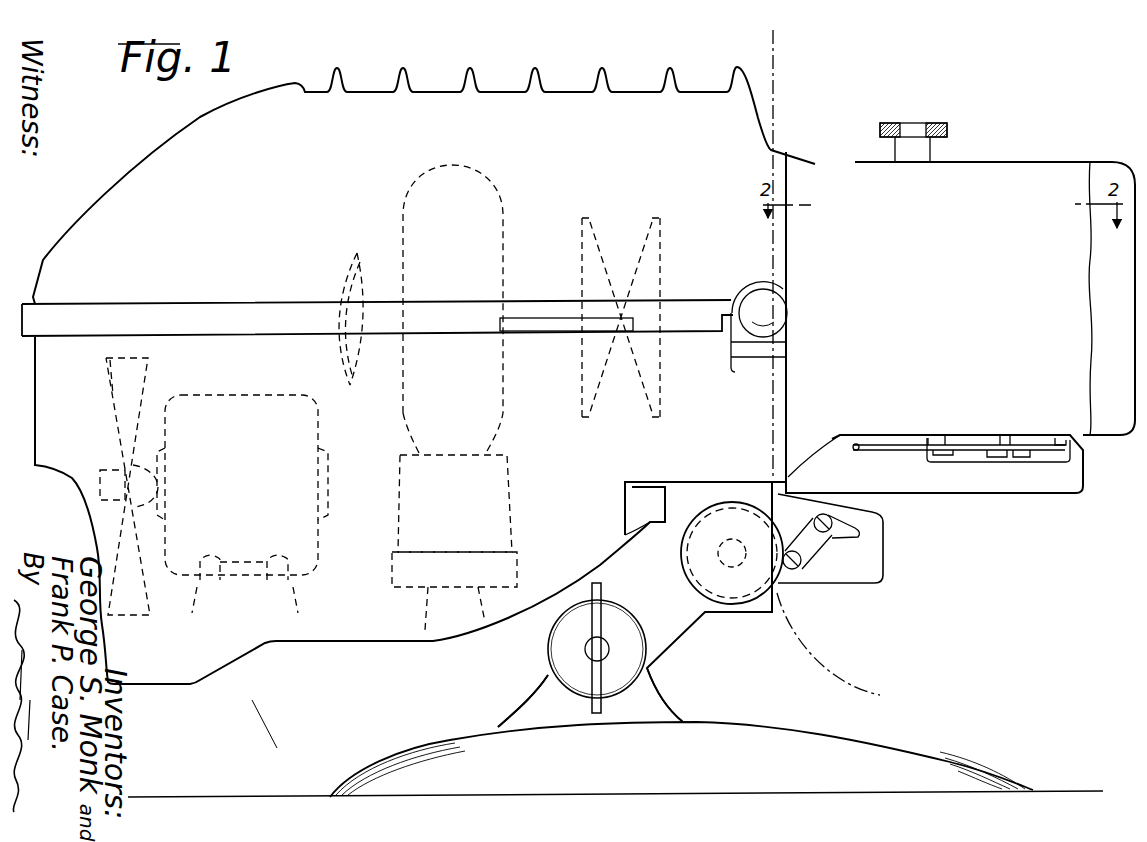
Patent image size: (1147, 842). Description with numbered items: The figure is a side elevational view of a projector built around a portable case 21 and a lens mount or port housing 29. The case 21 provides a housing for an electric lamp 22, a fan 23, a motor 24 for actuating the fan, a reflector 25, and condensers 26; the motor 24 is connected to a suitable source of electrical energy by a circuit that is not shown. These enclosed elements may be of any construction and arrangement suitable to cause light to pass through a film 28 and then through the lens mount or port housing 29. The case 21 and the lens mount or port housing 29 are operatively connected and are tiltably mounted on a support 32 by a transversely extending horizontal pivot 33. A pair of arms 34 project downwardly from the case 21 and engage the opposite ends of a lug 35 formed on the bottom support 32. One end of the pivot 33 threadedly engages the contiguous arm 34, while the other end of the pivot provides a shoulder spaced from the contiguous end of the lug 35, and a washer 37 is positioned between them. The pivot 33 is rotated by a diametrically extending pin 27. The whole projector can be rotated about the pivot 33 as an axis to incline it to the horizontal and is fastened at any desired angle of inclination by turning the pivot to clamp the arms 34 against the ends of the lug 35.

The portable case 21 is at (122, 182).
The electric lamp 22 is at (498, 194).
The fan 23 is at (117, 394).
The motor 24 is at (272, 397).
The reflector 25 is at (358, 258).
The condensers 26 is at (652, 224).
The diametrically extending pin 27 is at (601, 708).
The film 28 is at (776, 112).
The lens mount or port housing 29 is at (1013, 162).
The support 32 is at (886, 752).
The horizontal pivot 33 is at (590, 646).
The arms 34 is at (670, 630).
The lug 35 is at (550, 696).
The washer 37 is at (562, 660).